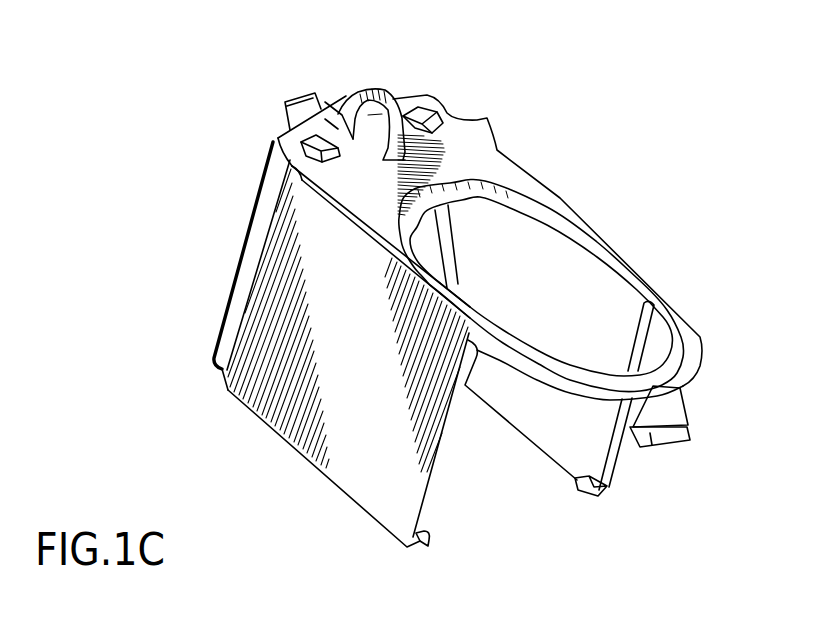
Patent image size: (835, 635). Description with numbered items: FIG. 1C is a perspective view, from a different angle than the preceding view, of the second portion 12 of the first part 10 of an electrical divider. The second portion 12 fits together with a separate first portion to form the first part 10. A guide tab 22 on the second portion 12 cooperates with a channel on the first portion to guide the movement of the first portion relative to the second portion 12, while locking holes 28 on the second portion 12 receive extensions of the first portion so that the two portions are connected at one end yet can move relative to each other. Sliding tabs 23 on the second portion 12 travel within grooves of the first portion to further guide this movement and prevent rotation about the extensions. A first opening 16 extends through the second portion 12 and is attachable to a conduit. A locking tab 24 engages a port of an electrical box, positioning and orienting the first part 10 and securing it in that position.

The first part 10 is at (600, 549).
The second portion 12 is at (608, 586).
The first opening 16 is at (567, 262).
The guide tab 22 is at (707, 414).
The sliding tabs 23 is at (617, 496).
The locking tab 24 is at (345, 85).
The locking holes 28 is at (345, 164).